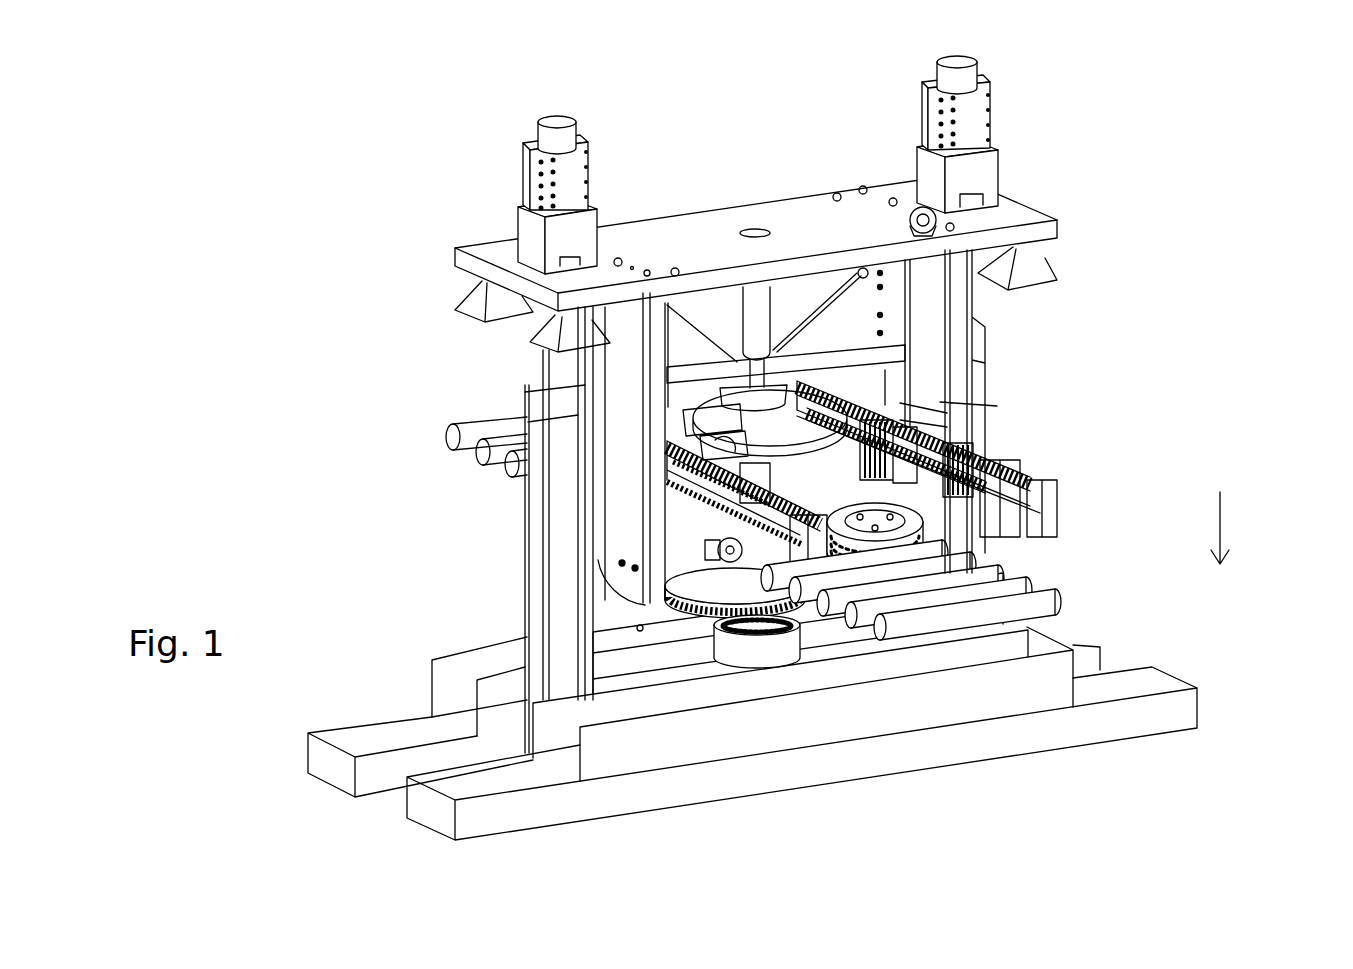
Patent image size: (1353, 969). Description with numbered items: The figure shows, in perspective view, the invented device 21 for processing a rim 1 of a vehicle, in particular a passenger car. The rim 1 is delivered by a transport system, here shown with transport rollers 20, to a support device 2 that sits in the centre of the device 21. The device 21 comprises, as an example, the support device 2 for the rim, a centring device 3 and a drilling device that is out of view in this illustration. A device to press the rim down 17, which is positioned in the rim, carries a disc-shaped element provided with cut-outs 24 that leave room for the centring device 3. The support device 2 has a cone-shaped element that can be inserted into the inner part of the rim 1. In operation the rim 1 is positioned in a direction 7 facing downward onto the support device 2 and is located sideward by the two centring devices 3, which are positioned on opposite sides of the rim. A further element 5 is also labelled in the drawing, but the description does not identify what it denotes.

The device 21 is at (1154, 220).
The device to press the rim down 17 is at (715, 405).
The cut-outs 24 is at (667, 447).
The support device 2 is at (737, 592).
The table drive base 5 is at (722, 601).
The centring device 3 is at (1015, 497).
The rim 1 is at (983, 557).
The direction 7 is at (1236, 522).
The transport rollers 20 is at (1067, 605).